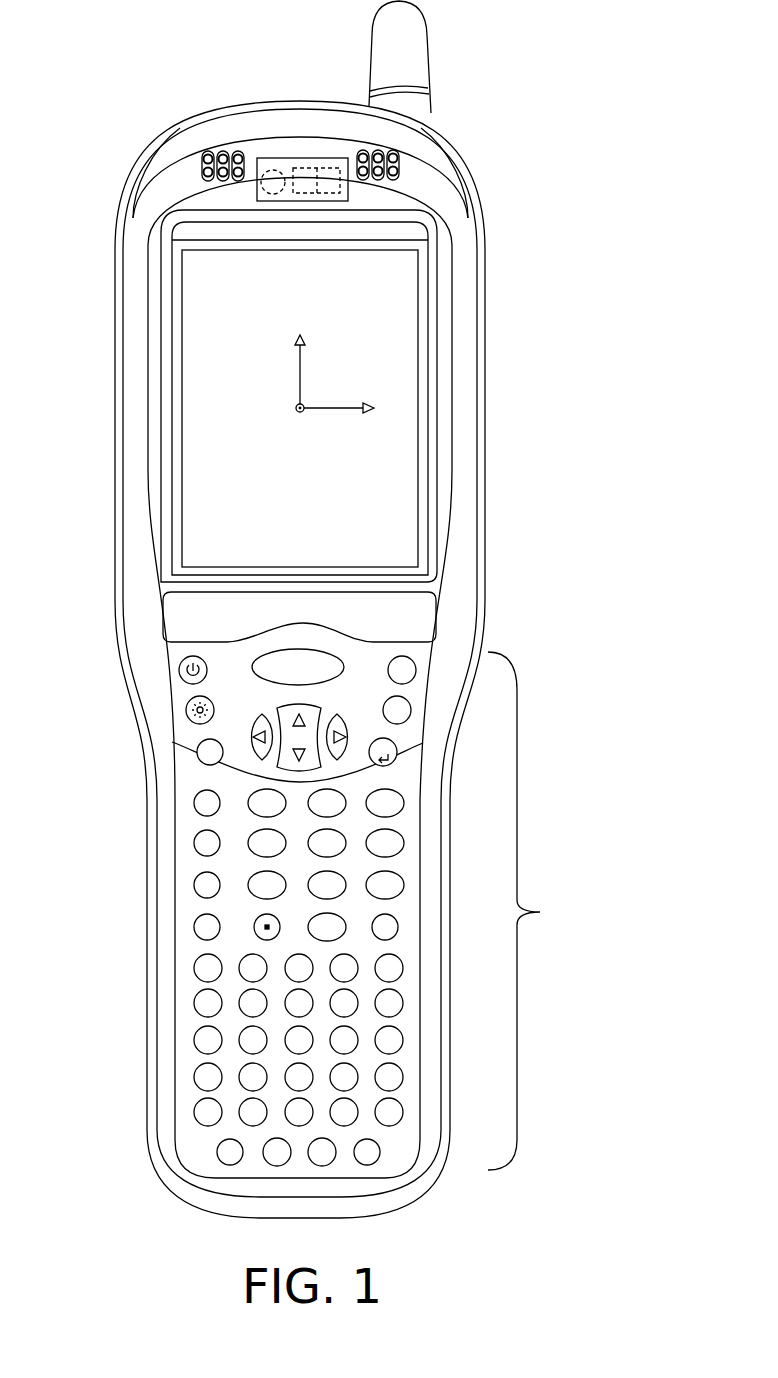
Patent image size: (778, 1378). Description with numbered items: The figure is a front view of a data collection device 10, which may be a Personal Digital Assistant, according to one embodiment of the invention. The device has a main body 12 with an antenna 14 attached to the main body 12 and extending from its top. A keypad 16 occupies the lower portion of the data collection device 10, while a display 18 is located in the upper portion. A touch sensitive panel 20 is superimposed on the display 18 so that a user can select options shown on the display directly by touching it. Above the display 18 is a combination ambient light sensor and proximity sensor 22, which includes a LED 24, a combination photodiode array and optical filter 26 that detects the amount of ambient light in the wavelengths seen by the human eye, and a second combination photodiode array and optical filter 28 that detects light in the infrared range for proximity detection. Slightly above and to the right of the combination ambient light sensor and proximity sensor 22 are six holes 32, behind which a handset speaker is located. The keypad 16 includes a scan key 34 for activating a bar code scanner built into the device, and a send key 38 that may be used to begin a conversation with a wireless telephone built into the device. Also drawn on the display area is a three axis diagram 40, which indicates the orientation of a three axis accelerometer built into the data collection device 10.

The data collection device 10 is at (572, 138).
The main body 12 is at (484, 612).
The antenna 14 is at (430, 33).
The keypad 16 is at (376, 911).
The display 18 is at (182, 448).
The touch sensitive panel 20 is at (315, 485).
The combination ambient light sensor and proximity sensor 22 is at (302, 166).
The LED 24 is at (272, 164).
The combination photodiode array and optical filter 26 is at (275, 168).
The second combination photodiode array and optical filter 28 is at (323, 166).
The holes 32 is at (401, 166).
The scan key 34 is at (298, 648).
The send key 38 is at (197, 753).
The three axis diagram 40 is at (296, 405).